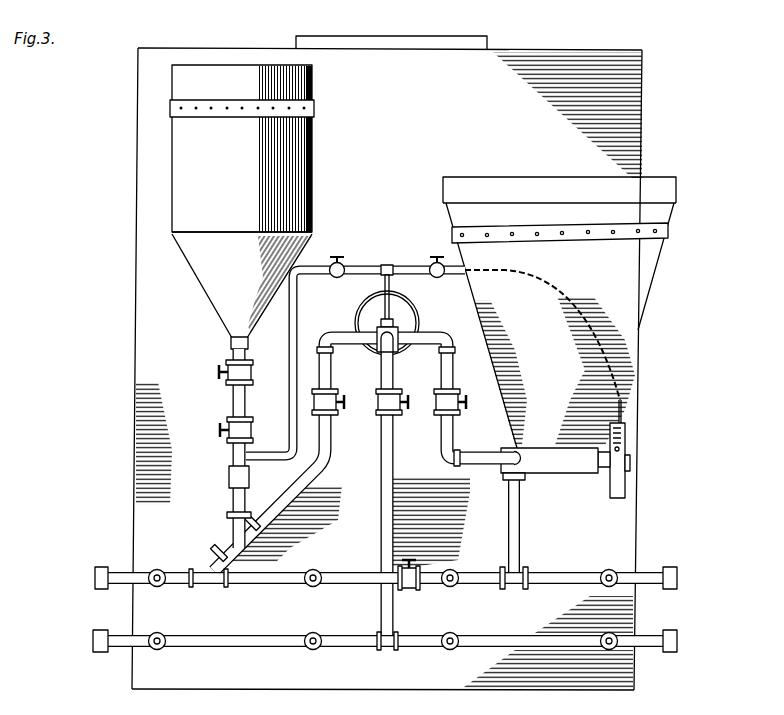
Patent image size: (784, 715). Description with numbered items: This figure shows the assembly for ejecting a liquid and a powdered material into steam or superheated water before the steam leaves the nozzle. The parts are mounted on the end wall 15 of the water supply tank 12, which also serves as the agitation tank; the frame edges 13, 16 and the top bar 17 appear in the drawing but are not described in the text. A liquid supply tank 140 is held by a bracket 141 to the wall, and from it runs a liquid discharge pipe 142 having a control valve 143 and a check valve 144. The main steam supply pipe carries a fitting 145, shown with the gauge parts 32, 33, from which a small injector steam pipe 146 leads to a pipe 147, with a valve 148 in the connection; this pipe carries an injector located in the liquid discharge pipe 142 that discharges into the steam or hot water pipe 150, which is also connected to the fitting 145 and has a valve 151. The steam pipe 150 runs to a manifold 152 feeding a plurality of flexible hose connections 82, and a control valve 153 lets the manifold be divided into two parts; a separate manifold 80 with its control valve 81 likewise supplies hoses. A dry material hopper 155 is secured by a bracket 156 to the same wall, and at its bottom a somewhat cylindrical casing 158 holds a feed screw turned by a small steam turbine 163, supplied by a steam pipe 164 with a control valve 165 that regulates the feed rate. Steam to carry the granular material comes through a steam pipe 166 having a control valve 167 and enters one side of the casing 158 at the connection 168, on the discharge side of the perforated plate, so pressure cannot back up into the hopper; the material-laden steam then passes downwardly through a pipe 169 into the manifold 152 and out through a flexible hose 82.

The water supply tank 12 is at (135, 82).
The bottom rail 13 is at (414, 690).
The end wall 15 is at (148, 107).
The top rail 16 is at (218, 48).
The top support bar 17 is at (432, 45).
The indicator pointer 32 is at (391, 300).
The gauge dial 33 is at (397, 312).
The manifold 80 is at (545, 647).
The control valve 81 is at (392, 406).
The flexible hose connections 82 is at (609, 569).
The liquid supply tank 140 is at (293, 88).
The bracket 141 is at (297, 115).
The liquid discharge pipe 142 is at (238, 407).
The control valve 143 is at (233, 365).
The check valve 144 is at (230, 430).
The fitting 145 is at (400, 331).
The small injector steam pipe 146 is at (384, 290).
The pipe 147 is at (300, 320).
The valve 148 is at (338, 258).
The steam or hot water pipe 150 is at (327, 383).
The valve 151 is at (332, 406).
The manifold 152 is at (357, 577).
The control valve 153 is at (412, 585).
The dry material hopper 155 is at (622, 214).
The bracket 156 is at (650, 235).
The cylindrical casing 158 is at (555, 462).
The small steam turbine 163 is at (627, 432).
The steam pipe 164 is at (618, 405).
The control valve 165 is at (437, 262).
The steam pipe 166 is at (447, 368).
The control valve 167 is at (457, 406).
The casing connection 168 is at (507, 464).
The pipe 169 is at (520, 532).